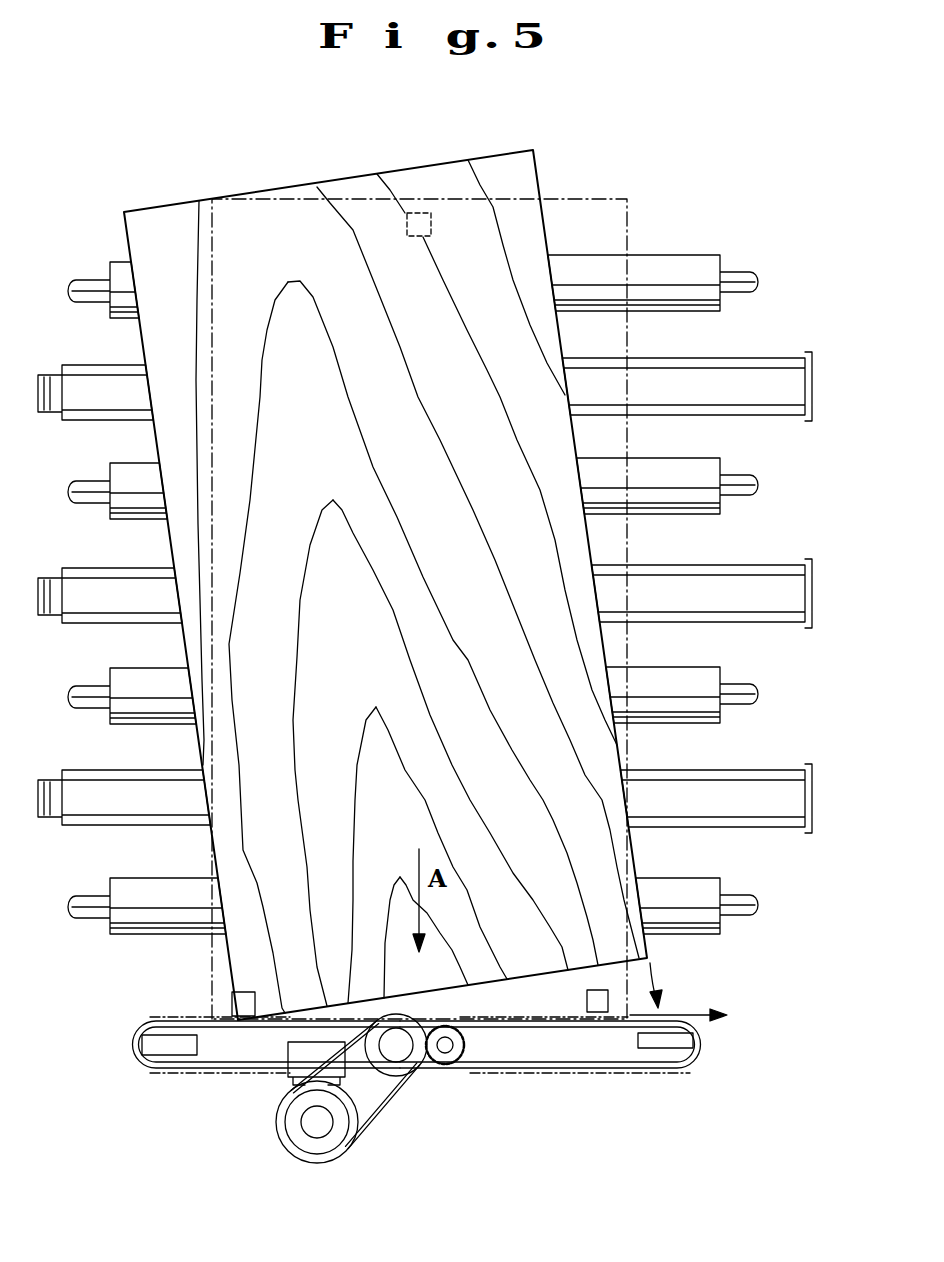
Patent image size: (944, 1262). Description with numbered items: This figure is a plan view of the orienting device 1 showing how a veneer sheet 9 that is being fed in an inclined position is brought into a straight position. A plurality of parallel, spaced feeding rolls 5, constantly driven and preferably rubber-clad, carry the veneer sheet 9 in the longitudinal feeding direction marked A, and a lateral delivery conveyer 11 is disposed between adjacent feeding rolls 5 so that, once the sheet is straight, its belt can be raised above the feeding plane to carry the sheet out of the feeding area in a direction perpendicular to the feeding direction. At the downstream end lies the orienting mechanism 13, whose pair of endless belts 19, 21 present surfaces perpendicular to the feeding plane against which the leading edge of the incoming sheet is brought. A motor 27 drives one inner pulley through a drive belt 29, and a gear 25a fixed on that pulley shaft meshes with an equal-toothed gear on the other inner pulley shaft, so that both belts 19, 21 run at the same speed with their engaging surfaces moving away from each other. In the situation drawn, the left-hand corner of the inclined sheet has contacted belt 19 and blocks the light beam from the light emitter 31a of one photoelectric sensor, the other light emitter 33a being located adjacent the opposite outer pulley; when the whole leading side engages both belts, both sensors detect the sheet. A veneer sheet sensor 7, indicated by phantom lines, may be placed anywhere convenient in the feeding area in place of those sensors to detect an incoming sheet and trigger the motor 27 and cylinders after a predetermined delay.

The orienting device 1 is at (150, 182).
The feeding rolls 5 is at (683, 272).
The veneer sheet sensor 7 is at (425, 228).
The veneer sheet 9 is at (392, 203).
The lateral delivery conveyer 11 is at (700, 385).
The orienting mechanism 13 is at (417, 1098).
The endless belt 19 is at (213, 1077).
The endless belt 21 is at (617, 1068).
The gear 25a is at (452, 1060).
The motor 27 is at (345, 1148).
The drive belt 29 is at (388, 1095).
The light emitter 31a is at (248, 992).
The light emitter 33a is at (587, 1000).